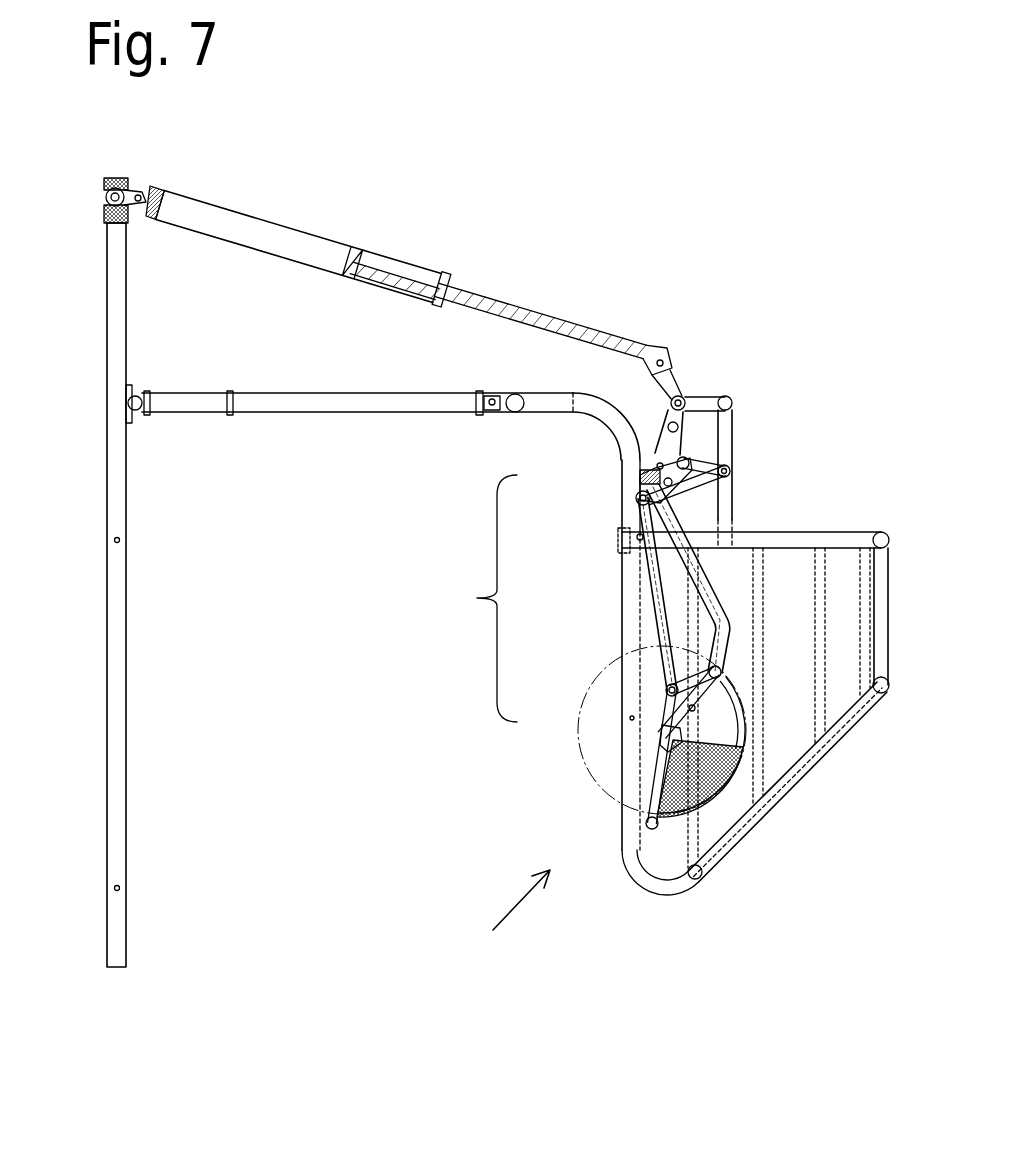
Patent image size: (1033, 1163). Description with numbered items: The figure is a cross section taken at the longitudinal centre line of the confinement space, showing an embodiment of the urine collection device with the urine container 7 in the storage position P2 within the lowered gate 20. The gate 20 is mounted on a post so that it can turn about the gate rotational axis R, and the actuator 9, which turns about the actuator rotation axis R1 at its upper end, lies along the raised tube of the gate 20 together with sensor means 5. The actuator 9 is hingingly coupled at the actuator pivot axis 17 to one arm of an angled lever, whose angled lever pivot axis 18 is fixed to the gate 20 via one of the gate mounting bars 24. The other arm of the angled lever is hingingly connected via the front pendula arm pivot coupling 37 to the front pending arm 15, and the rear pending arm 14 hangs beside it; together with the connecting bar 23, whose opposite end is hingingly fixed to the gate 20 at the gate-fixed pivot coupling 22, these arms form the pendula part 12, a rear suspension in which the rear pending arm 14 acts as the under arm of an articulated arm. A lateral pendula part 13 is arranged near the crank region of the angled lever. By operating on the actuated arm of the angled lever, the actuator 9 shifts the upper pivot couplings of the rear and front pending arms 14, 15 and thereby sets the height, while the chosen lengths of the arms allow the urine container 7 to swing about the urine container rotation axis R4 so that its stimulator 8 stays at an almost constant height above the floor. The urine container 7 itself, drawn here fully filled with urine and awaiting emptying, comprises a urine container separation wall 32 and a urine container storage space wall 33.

The sensor means 5 is at (229, 413).
The urine container 7 is at (732, 738).
The stimulator 8 is at (648, 823).
The actuator 9 is at (204, 216).
The pendula part 12 is at (477, 598).
The lateral pendula part 13 is at (638, 493).
The rear pending arm 14 is at (653, 603).
The front pending arm 15 is at (720, 590).
The actuator pivot axis 17 is at (663, 365).
The angled lever pivot axis 18 is at (678, 396).
The gate 20 is at (888, 583).
The gate-fixed pivot coupling 22 is at (733, 471).
The connecting bar 23 is at (700, 472).
The gate mounting bars 24 is at (745, 412).
The urine container separation wall 32 is at (690, 760).
The urine container storage space wall 33 is at (665, 775).
The front pendula arm pivot coupling 37 is at (636, 498).
The gate rotational axis R is at (137, 403).
The actuator rotation axis R1 is at (106, 200).
The urine container rotation axis R4 is at (657, 722).
The storage position P2 is at (498, 912).